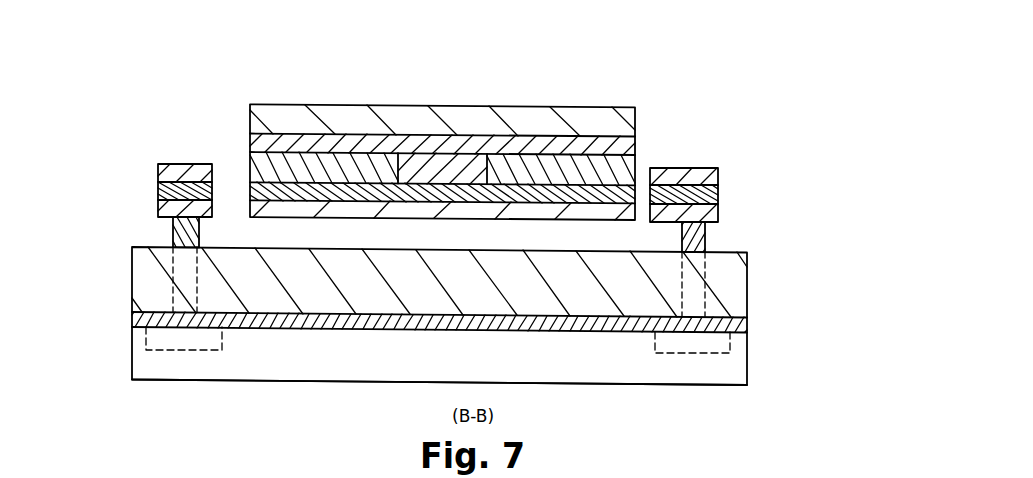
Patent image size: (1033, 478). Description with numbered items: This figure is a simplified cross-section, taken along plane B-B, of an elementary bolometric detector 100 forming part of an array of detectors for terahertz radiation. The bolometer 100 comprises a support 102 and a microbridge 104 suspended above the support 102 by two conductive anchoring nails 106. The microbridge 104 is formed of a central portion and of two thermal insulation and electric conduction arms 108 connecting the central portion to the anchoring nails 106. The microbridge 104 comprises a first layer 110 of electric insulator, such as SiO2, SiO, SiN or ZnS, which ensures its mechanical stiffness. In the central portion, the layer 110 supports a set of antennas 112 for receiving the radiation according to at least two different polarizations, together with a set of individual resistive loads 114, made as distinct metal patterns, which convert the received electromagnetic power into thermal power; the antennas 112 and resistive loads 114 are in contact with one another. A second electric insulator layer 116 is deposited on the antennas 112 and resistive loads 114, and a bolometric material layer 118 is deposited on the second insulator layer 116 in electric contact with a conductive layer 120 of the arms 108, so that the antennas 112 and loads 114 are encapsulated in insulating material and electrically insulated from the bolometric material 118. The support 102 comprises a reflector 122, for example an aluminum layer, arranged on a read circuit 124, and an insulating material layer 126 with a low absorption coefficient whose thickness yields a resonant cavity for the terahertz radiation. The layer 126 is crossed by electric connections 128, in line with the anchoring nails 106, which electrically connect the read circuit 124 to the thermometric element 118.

The elementary bolometric detector 100 is at (121, 97).
The support 102 is at (125, 243).
The microbridge 104 is at (318, 72).
The conductive anchoring nails 106 is at (173, 232).
The thermal insulation and electric conduction arms 108 is at (185, 164).
The first layer of electric insulator 110 is at (413, 208).
The antennas 112 is at (333, 158).
The individual resistive loads 114 is at (462, 190).
The second electric insulator layer 116 is at (636, 148).
The bolometric material layer 118 is at (603, 118).
The conductive layer 120 is at (158, 187).
The reflector 122 is at (742, 320).
The read circuit 124 is at (733, 360).
The insulating material layer 126 is at (727, 275).
The electric connections 128 is at (697, 292).